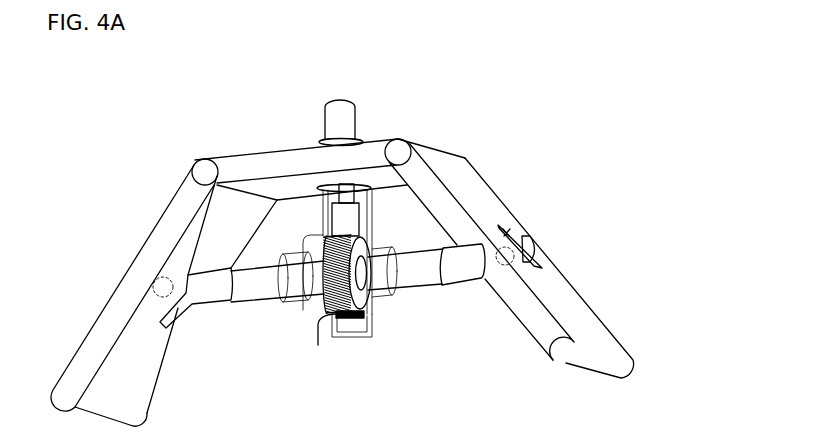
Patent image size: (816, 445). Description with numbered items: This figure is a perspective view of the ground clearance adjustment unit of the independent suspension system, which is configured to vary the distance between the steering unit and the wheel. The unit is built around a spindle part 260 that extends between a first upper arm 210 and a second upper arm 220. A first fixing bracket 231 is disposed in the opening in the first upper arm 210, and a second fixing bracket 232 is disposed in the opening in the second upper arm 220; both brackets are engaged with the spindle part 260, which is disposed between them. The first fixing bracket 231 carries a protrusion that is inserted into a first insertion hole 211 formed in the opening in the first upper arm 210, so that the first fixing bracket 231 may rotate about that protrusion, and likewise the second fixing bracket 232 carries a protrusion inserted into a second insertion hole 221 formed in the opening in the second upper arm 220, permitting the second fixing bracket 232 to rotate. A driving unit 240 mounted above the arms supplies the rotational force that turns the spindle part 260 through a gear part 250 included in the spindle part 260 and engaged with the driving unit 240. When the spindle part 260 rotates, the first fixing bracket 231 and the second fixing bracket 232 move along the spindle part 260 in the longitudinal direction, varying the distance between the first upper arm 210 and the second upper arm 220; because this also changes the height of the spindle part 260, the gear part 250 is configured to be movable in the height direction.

The first upper arm 210 is at (481, 190).
The first insertion hole 211 is at (518, 236).
The second upper arm 220 is at (170, 213).
The second insertion hole 221 is at (158, 281).
The first fixing bracket 231 is at (461, 275).
The second fixing bracket 232 is at (207, 294).
The driving unit 240 is at (349, 119).
The gear part 250 is at (316, 322).
The spindle part 260 is at (263, 296).